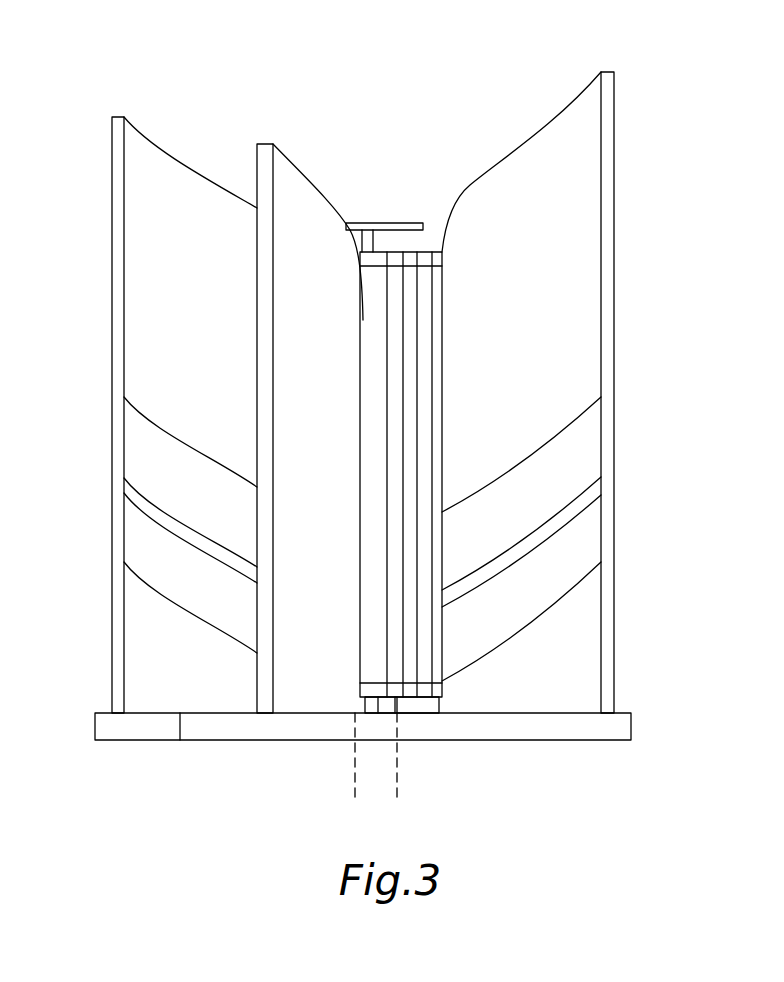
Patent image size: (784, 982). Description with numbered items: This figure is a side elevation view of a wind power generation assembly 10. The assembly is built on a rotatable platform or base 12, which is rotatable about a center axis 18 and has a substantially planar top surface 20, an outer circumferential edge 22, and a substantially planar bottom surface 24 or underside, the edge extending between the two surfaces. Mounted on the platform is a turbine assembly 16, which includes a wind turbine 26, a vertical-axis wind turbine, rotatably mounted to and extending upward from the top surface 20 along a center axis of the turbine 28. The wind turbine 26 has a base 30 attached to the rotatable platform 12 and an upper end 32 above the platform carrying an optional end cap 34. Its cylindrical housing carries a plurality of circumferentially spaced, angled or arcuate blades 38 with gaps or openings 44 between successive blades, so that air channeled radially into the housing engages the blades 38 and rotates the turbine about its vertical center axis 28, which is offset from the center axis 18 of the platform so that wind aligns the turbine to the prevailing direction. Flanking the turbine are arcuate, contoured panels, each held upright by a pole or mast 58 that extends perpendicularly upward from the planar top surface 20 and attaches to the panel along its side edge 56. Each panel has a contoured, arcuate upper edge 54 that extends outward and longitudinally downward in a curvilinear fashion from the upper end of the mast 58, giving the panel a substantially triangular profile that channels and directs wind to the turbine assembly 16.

The wind power generation assembly 10 is at (423, 55).
The rotatable platform or base 12 is at (150, 735).
The turbine assembly 16 is at (381, 196).
The center axis 18 is at (359, 787).
The planar top surface 20 is at (180, 740).
The outer circumferential edge 22 is at (95, 724).
The planar bottom surface 24 is at (230, 740).
The wind turbine 26 is at (394, 272).
The center axis of the turbine 28 is at (397, 788).
The base 30 is at (378, 713).
The upper end 32 is at (442, 285).
The end cap 34 is at (380, 223).
The blades 38 is at (417, 670).
The gaps or openings 44 is at (432, 643).
The upper edge 54 is at (148, 142).
The side edge 56 is at (112, 270).
The pole or mast 58 is at (257, 150).